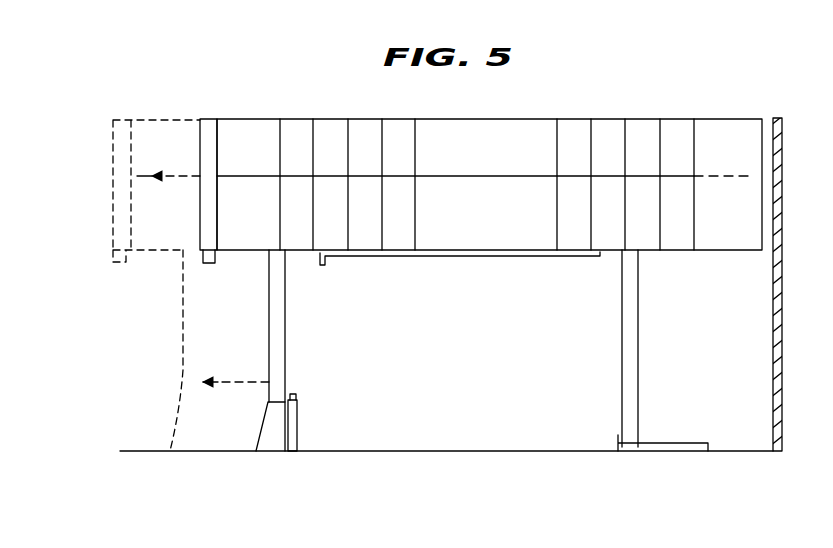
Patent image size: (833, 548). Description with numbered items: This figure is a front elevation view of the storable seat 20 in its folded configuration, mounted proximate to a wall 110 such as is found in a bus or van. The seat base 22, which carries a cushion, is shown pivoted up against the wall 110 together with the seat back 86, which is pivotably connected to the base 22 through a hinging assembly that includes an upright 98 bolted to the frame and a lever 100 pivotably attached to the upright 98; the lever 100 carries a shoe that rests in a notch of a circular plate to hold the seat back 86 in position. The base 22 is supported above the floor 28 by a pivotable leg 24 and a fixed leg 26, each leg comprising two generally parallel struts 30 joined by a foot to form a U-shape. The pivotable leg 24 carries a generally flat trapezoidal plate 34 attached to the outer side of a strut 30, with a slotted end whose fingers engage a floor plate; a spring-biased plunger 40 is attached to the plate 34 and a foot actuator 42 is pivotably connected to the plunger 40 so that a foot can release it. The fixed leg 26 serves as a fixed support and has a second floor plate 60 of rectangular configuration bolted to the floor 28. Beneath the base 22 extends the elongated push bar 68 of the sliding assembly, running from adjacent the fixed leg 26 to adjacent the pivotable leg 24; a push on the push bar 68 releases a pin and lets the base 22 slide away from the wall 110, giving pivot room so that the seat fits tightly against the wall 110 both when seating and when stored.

The storable seat 20 is at (350, 100).
The seat base 22 is at (723, 258).
The pivotable leg 24 is at (291, 352).
The fixed leg 26 is at (614, 355).
The floor 28 is at (448, 451).
The struts 30 is at (276, 328).
The trapezoidal plate 34 is at (266, 432).
The spring-biased plunger 40 is at (297, 430).
The foot actuator 42 is at (293, 393).
The second floor plate 60 is at (666, 443).
The push bar 68 is at (483, 254).
The seat back 86 is at (472, 138).
The upright 98 is at (207, 125).
The lever 100 is at (215, 263).
The wall 110 is at (775, 207).